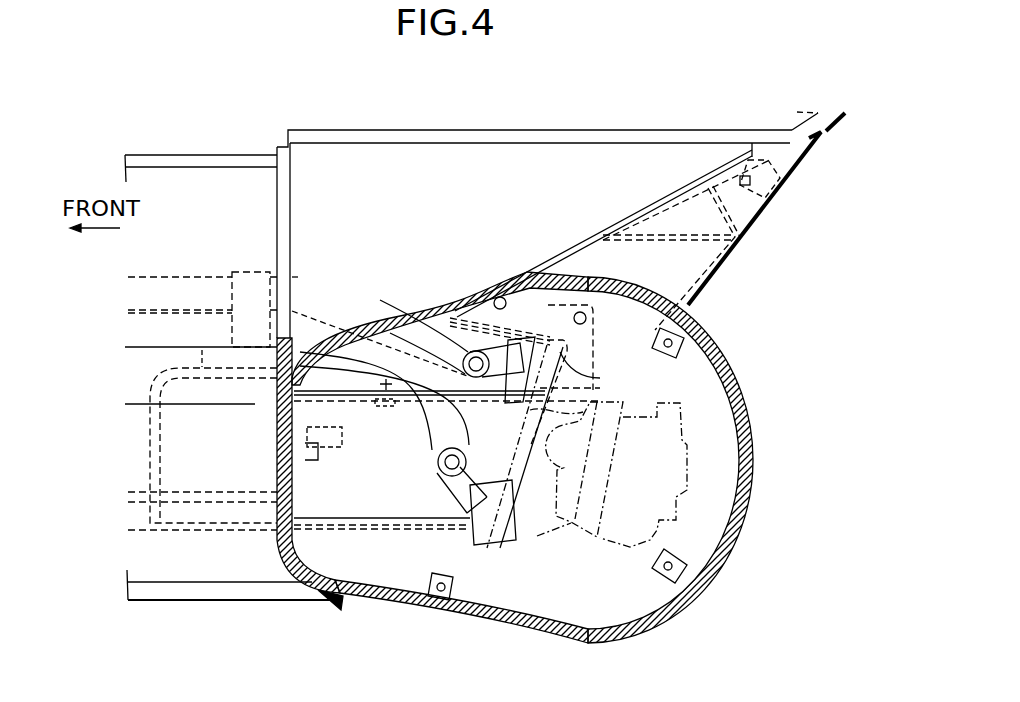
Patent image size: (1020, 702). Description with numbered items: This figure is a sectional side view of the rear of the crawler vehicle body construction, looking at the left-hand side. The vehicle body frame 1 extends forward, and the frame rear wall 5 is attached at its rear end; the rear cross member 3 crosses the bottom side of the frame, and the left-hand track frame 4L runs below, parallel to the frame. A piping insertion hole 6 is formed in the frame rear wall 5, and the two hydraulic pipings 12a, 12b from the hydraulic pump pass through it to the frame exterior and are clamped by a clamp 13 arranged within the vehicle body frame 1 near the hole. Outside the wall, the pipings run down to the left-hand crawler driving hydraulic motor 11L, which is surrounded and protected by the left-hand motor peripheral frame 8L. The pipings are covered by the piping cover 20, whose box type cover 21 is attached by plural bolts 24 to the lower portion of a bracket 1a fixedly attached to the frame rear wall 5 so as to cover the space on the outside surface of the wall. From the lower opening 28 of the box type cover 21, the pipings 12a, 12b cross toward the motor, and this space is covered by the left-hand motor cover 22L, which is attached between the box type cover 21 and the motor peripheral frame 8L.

The vehicle body frame 1 is at (229, 155).
The bracket 1a is at (445, 130).
The rear cross member 3 is at (150, 470).
The left-hand track frame 4L is at (225, 600).
The frame rear wall 5 is at (288, 170).
The piping insertion hole 6 is at (290, 275).
The left-hand motor peripheral frame 8L is at (750, 514).
The left-hand crawler driving hydraulic motor 11L is at (752, 448).
The hydraulic piping 12a is at (440, 430).
The hydraulic piping 12b is at (460, 335).
The clamp 13 is at (240, 272).
The piping cover 20 is at (742, 255).
The box type cover 21 is at (697, 280).
The left-hand motor cover 22L is at (392, 505).
The bolt 24 is at (747, 188).
The lower opening 28 is at (400, 412).